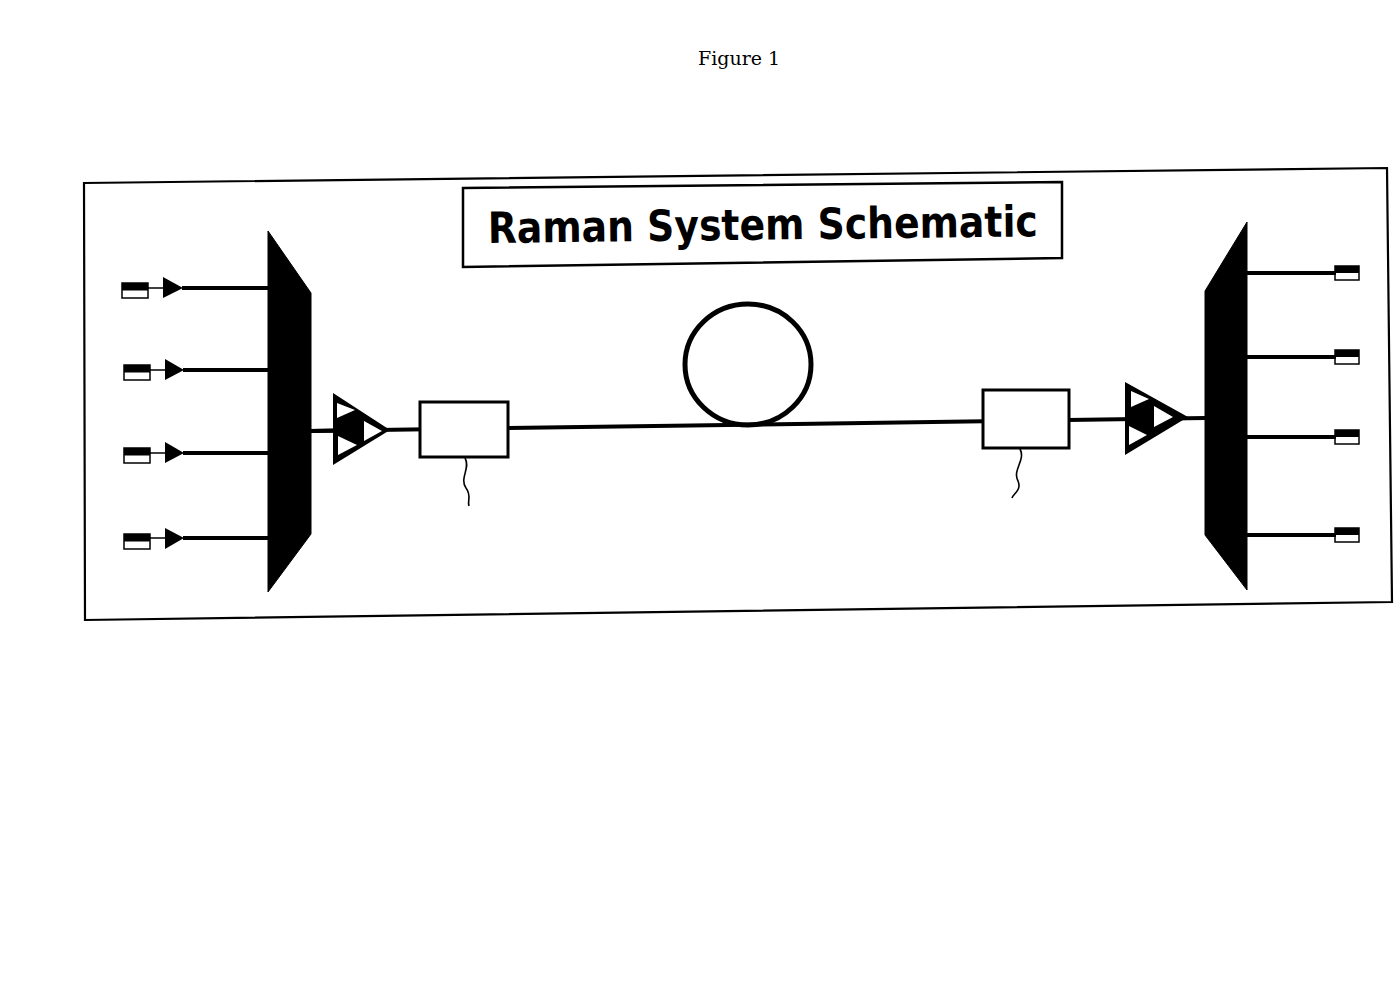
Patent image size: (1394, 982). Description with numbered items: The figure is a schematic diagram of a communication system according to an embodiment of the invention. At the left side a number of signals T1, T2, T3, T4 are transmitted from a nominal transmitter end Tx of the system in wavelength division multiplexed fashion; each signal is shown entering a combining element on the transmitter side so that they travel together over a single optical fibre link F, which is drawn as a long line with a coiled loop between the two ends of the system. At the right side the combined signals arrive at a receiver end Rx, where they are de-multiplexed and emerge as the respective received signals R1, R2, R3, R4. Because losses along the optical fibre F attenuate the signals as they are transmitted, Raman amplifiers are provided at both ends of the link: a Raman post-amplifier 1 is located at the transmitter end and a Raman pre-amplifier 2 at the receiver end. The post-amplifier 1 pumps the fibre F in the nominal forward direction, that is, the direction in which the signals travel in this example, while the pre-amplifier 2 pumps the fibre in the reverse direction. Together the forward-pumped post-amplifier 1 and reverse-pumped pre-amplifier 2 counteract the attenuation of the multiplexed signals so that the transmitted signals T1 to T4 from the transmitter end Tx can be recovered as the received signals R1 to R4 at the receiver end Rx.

The Raman post-amplifier 1 is at (467, 402).
The Raman pre-amplifier 2 is at (1027, 390).
The optical fibre link F is at (842, 424).
The transmitted signal T1 is at (183, 278).
The transmitted signal T2 is at (185, 359).
The transmitted signal T3 is at (187, 464).
The transmitted signal T4 is at (187, 551).
The transmitter end Tx is at (214, 411).
The received signal R1 is at (1305, 256).
The received signal R2 is at (1307, 343).
The received signal R3 is at (1307, 454).
The received signal R4 is at (1307, 549).
The receiver end Rx is at (1282, 406).